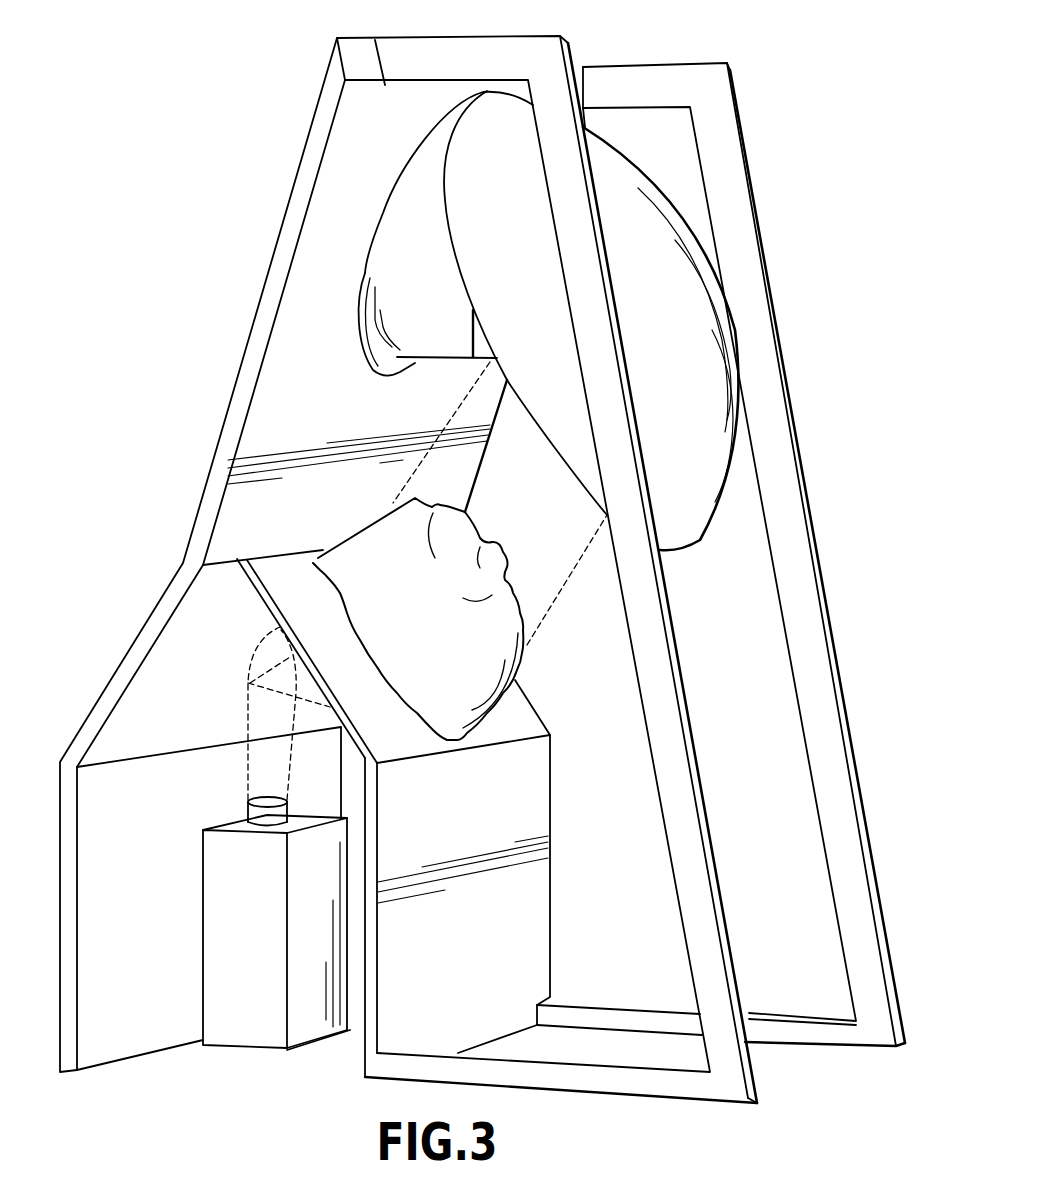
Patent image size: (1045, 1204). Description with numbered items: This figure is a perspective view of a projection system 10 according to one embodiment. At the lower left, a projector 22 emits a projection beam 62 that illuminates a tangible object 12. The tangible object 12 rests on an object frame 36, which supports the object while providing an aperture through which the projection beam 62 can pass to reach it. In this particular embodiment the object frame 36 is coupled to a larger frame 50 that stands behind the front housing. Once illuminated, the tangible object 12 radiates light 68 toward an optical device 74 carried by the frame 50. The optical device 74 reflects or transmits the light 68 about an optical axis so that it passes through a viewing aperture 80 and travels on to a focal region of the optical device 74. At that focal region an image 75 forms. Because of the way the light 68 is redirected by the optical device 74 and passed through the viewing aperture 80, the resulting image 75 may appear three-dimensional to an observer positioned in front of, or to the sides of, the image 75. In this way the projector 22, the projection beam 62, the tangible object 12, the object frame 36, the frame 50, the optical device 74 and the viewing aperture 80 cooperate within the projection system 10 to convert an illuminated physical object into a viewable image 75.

The projection system 10 is at (786, 116).
The tangible object 12 is at (527, 667).
The projector 22 is at (203, 923).
The object frame 36 is at (550, 868).
The frame 50 is at (830, 625).
The projection beam 62 is at (247, 718).
The light 68 is at (542, 512).
The optical device 74 is at (677, 327).
The image 75 is at (403, 213).
The viewing aperture 80 is at (358, 340).